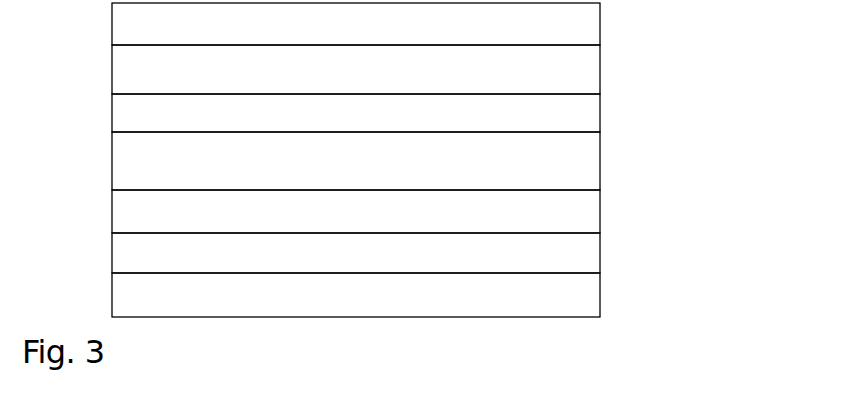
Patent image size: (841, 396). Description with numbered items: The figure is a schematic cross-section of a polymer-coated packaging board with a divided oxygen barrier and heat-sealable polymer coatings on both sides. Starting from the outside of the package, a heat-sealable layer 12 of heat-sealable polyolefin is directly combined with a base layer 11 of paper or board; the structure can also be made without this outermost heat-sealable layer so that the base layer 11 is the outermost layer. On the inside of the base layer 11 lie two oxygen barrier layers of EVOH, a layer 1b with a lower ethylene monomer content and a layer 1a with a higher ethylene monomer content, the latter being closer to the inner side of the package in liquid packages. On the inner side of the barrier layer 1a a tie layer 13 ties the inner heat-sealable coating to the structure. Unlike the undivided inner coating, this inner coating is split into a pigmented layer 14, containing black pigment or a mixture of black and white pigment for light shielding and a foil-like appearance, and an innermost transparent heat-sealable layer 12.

The heat-sealable layer 12 is at (590, 28).
The base layer 11 is at (590, 76).
The EVOH layer with a lower ethylene monomer content 1b is at (590, 122).
The EVOH layer with a higher ethylene monomer content 1a is at (590, 167).
The tie layer 13 is at (590, 214).
The heat-sealable layer with pigment 14 is at (590, 257).